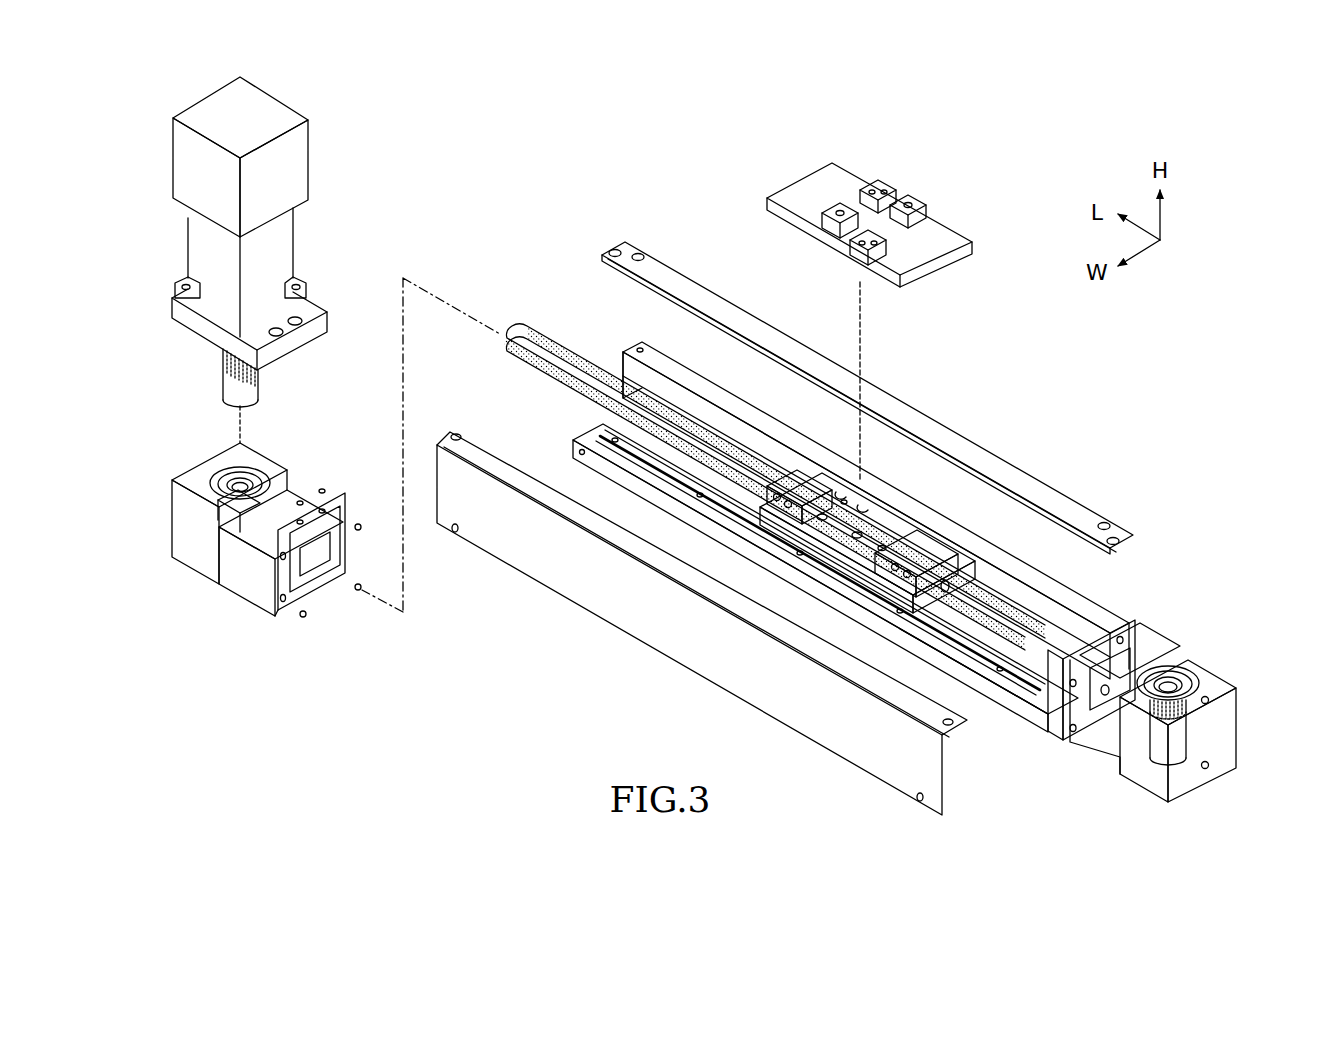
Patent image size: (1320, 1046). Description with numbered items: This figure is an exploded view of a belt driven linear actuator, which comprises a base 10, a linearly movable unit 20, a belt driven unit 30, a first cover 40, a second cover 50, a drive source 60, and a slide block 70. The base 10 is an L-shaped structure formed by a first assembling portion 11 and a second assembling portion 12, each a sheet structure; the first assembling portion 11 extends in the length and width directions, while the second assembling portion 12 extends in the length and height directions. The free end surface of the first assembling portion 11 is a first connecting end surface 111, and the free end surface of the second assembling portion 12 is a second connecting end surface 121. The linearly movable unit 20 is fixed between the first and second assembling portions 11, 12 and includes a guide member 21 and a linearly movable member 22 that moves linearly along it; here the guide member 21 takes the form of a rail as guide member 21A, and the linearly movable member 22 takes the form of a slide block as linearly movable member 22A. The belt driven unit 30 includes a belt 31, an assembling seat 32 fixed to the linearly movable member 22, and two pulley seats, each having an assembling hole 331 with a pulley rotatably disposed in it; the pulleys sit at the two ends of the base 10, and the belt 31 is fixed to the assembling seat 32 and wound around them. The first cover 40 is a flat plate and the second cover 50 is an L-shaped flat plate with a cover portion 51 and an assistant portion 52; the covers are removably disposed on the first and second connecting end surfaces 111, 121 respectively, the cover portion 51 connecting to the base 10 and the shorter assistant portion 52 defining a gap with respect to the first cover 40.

The base 10 is at (626, 347).
The first assembling portion 11 is at (805, 594).
The first connecting end surface 111 is at (1020, 705).
The second assembling portion 12 is at (876, 490).
The second connecting end surface 121 is at (663, 362).
The linearly movable unit 20 is at (888, 474).
The guide member 21 is at (863, 430).
The guide member in the form of a rail 21A is at (720, 493).
The linearly movable member 22 is at (883, 497).
The linearly movable member in the form of a slide block 22A is at (853, 562).
The belt driven unit 30 is at (902, 611).
The belt 31 is at (1050, 636).
The assembling seat 32 is at (950, 548).
The assembling hole 331 is at (1190, 670).
The first cover 40 is at (672, 264).
The second cover 50 is at (693, 577).
The cover portion 51 is at (547, 573).
The assistant portion 52 is at (482, 452).
The drive source 60 is at (316, 154).
The slide block 70 is at (904, 187).